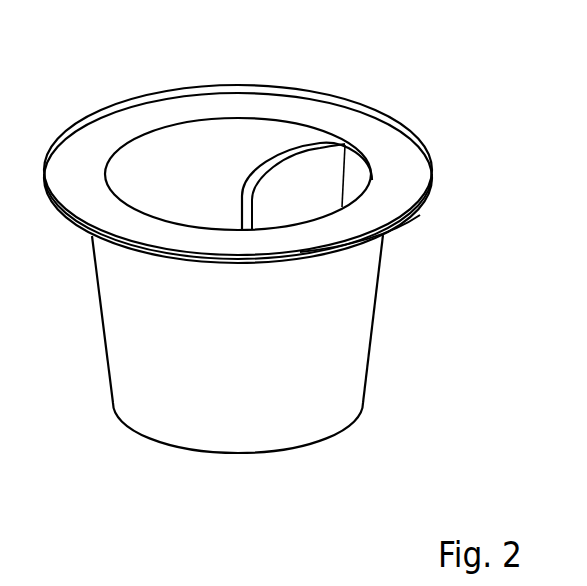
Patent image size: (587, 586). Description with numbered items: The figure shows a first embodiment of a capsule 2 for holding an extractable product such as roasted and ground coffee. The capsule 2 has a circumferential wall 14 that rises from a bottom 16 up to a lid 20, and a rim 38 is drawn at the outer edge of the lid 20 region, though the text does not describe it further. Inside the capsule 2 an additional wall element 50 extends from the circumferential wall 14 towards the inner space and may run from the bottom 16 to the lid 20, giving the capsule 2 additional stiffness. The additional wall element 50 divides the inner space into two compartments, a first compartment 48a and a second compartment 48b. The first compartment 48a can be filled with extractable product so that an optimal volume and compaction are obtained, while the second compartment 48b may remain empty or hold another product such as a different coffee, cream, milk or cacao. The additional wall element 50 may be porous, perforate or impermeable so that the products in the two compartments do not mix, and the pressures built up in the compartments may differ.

The capsule 2 is at (509, 116).
The circumferential wall 14 is at (335, 303).
The bottom 16 is at (319, 451).
The lid 20 is at (330, 92).
The flange rim 38 is at (412, 215).
The compartment 48a is at (195, 170).
The second compartment 48b is at (327, 183).
The additional wall element 50 is at (275, 197).